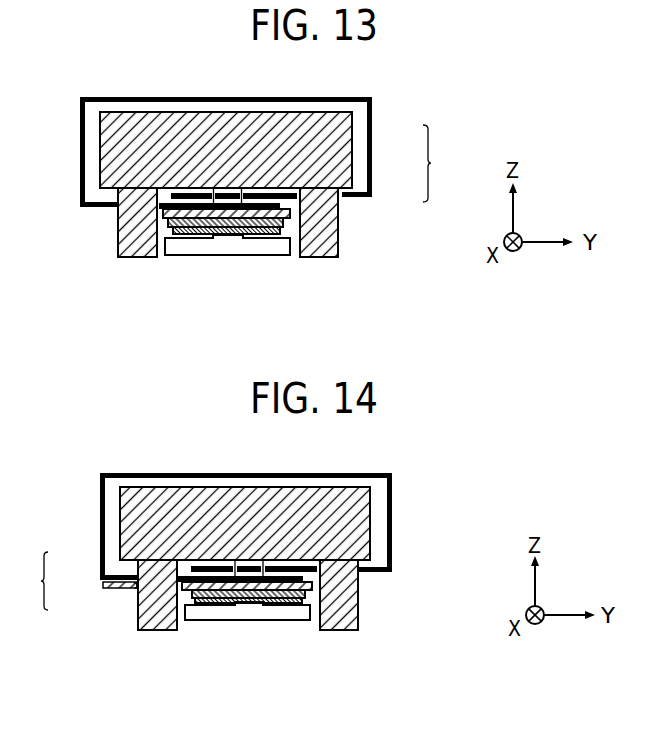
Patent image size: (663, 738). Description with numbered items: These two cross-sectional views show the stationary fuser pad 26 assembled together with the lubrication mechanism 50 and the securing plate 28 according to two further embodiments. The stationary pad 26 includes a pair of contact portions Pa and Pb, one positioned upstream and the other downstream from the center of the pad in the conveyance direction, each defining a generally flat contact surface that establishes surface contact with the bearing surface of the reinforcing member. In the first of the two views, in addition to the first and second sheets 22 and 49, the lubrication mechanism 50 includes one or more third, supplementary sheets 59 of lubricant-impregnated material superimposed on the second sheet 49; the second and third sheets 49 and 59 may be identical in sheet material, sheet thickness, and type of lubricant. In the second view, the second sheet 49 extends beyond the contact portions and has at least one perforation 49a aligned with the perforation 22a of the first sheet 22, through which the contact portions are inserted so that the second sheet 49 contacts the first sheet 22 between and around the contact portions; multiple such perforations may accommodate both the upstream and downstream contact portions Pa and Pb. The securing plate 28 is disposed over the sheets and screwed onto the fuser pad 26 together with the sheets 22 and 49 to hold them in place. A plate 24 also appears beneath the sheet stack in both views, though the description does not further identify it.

In FIG. 13, the first sheet 22 is at (372, 132).
In FIG. 14, the first sheet 22 is at (100, 567).
In FIG. 13, the perforation of the first sheet 22a is at (119, 206).
In FIG. 14, the perforation of the first sheet 22a is at (139, 561).
In FIG. 13, the substrate 24 is at (245, 258).
In FIG. 14, the substrate 24 is at (245, 622).
In FIG. 13, the stationary fuser pad 26 is at (337, 127).
In FIG. 14, the stationary fuser pad 26 is at (355, 526).
In FIG. 13, the securing plate 28 is at (283, 232).
In FIG. 14, the securing plate 28 is at (303, 594).
In FIG. 13, the second sheet 49 is at (296, 212).
In FIG. 14, the second sheet 49 is at (100, 590).
In FIG. 14, the perforation of the second sheet 49a is at (136, 584).
In FIG. 13, the lubrication mechanism 50 is at (441, 163).
In FIG. 14, the lubrication mechanism 50 is at (31, 581).
In FIG. 13, the third, supplementary sheet 59 is at (298, 220).
In FIG. 13, the upstream contact portion Pa is at (339, 249).
In FIG. 14, the upstream contact portion Pa is at (359, 621).
In FIG. 13, the downstream contact portion Pb is at (118, 246).
In FIG. 14, the downstream contact portion Pb is at (157, 631).